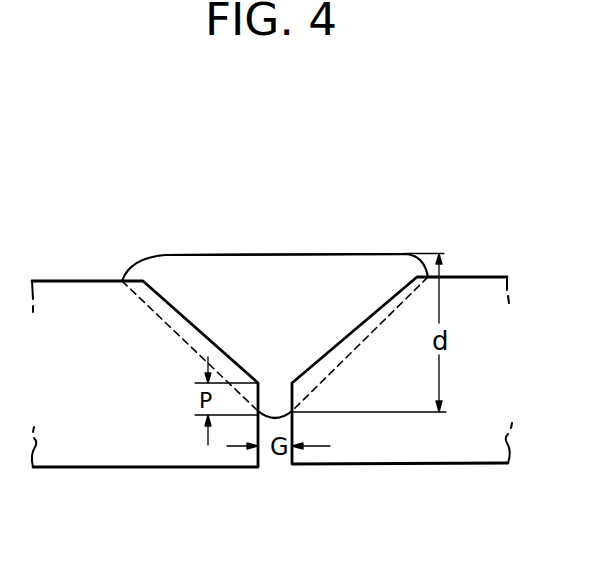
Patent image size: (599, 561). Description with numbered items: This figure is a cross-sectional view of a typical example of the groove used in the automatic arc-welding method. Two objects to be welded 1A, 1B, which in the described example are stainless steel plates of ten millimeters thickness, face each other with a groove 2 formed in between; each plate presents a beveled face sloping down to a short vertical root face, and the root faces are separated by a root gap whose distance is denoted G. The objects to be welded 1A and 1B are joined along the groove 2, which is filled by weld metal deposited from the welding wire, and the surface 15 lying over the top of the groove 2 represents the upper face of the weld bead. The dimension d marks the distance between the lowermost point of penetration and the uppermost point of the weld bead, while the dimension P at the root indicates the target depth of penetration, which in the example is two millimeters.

The object to be welded 1A is at (77, 300).
The object to be welded 1B is at (478, 290).
The groove 2 is at (226, 276).
The weld bead surface 15 is at (296, 255).